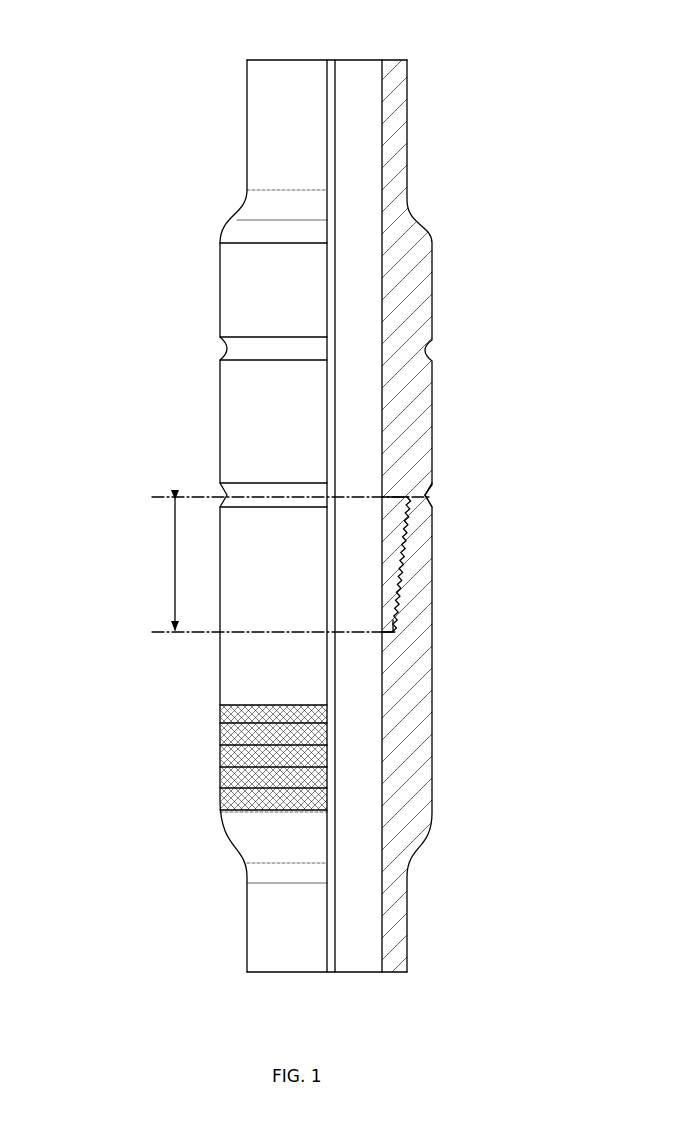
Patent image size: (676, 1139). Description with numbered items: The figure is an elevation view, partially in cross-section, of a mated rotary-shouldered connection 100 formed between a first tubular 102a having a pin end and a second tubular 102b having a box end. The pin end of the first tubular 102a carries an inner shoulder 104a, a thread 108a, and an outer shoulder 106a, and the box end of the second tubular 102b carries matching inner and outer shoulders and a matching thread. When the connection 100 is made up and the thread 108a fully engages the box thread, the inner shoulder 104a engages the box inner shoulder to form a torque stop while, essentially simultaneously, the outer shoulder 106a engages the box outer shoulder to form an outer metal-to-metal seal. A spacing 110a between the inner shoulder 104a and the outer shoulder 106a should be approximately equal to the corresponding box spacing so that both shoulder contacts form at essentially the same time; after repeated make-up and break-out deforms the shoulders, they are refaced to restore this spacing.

The rotary-shouldered connection 100 is at (145, 70).
The first tubular 102a is at (383, 316).
The second tubular 102b is at (400, 808).
The inner shoulder 104a is at (398, 638).
The outer shoulder 106a is at (436, 492).
The thread 108a is at (410, 564).
The spacing 110a is at (260, 564).